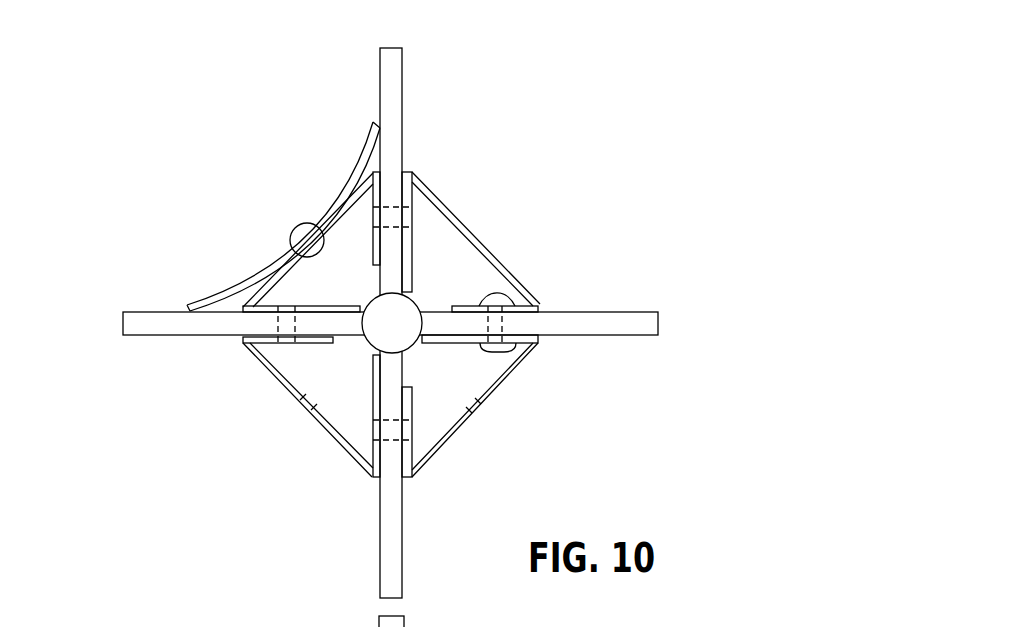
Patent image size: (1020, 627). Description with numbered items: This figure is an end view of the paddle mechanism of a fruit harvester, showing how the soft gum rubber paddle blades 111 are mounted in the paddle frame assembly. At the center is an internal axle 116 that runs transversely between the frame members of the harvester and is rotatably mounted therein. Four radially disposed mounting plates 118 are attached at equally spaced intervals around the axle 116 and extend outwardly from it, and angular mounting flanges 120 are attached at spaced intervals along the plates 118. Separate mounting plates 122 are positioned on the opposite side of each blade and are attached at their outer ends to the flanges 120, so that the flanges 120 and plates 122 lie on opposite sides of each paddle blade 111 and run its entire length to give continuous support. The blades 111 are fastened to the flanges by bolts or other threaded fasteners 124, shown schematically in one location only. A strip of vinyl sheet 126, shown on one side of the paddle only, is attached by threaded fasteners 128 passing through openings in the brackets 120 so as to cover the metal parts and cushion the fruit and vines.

The paddle blade 111 is at (395, 90).
The internal axle 116 is at (413, 298).
The mounting plate 118 is at (412, 243).
The angular mounting flange 120 is at (508, 373).
The separate mounting plate 122 is at (410, 448).
The threaded fastener 124 is at (507, 295).
The vinyl sheet 126 is at (360, 162).
The threaded fastener 128 is at (298, 228).